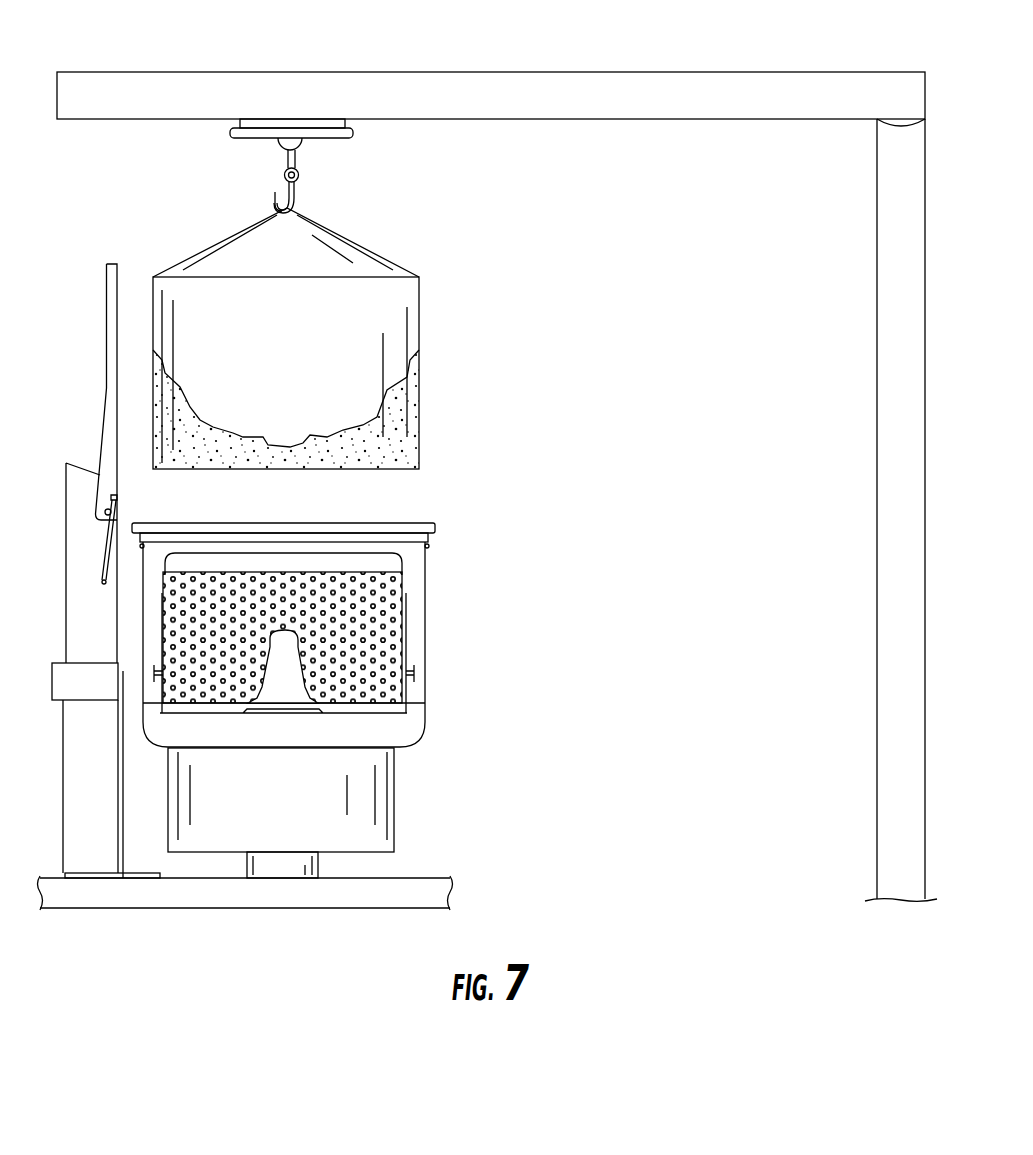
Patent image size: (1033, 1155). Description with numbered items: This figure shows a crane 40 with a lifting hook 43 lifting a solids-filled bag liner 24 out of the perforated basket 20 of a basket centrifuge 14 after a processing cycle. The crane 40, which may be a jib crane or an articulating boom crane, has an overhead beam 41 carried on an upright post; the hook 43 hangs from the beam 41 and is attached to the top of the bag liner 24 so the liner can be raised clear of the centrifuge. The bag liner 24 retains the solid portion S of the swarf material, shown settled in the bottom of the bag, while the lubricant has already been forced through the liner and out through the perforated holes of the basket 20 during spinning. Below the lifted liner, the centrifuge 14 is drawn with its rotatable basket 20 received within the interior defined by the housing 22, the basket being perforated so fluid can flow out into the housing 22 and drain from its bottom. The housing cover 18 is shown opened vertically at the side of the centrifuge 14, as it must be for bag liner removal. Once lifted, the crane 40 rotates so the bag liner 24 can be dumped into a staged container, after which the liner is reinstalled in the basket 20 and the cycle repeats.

The basket centrifuge 14 is at (325, 700).
The housing cover 18 is at (106, 388).
The rotatable basket 20 is at (393, 567).
The housing 22 is at (425, 628).
The bag liner 24 is at (327, 330).
The solid portion of the swarf material S is at (420, 433).
The crane 40 is at (867, 338).
The overhead beam 41 is at (703, 78).
The hook 43 is at (298, 192).